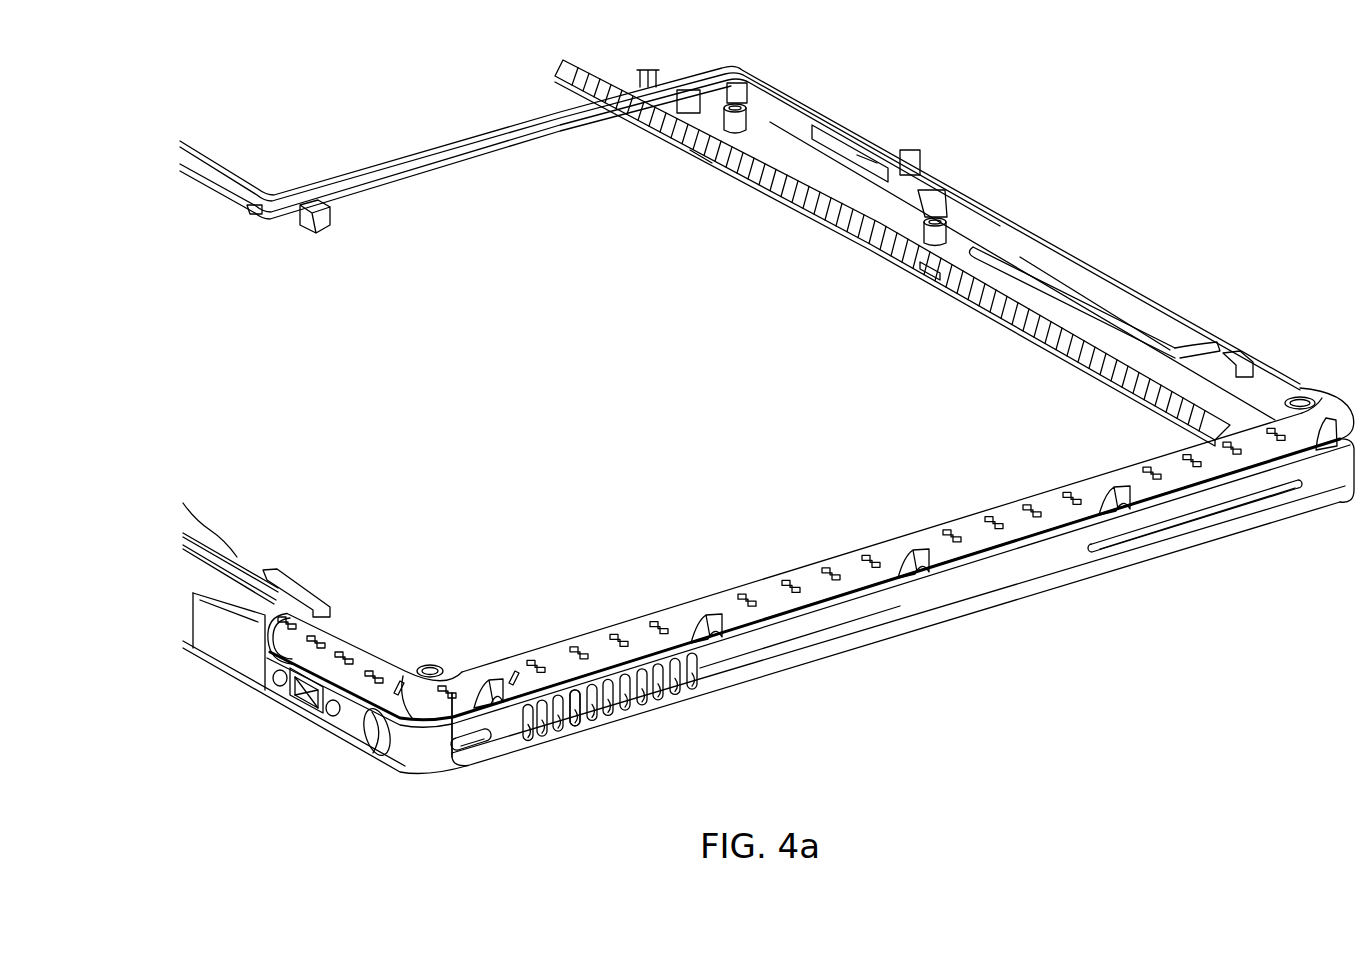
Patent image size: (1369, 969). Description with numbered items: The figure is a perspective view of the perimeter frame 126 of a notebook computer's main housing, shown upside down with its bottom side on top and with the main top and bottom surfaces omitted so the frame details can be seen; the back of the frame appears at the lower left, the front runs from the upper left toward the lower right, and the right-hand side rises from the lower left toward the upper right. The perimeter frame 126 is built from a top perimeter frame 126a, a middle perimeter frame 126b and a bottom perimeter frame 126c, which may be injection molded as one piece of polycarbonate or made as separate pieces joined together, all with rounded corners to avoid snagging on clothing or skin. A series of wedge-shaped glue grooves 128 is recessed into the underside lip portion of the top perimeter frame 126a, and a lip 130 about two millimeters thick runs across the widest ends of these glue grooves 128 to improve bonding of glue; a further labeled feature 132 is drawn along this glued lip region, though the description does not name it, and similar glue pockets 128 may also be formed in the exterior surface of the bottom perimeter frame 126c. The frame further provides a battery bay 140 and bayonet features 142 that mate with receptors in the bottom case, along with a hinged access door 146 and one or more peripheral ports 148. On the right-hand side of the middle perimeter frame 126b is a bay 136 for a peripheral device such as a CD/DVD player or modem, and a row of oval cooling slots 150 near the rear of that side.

The perimeter frame 126 is at (768, 422).
The top perimeter frame 126a is at (463, 768).
The middle perimeter frame 126b is at (780, 645).
The bottom perimeter frame 126c is at (655, 705).
The glue grooves/pockets 128 is at (793, 205).
The lip 130 is at (703, 146).
The notch 132 is at (930, 265).
The bay 136 is at (1195, 522).
The battery bay 140 is at (485, 104).
The bayonet features 142 is at (920, 578).
The hinged access door 146 is at (235, 655).
The peripheral ports 148 is at (363, 747).
The cooling slots 150 is at (577, 727).